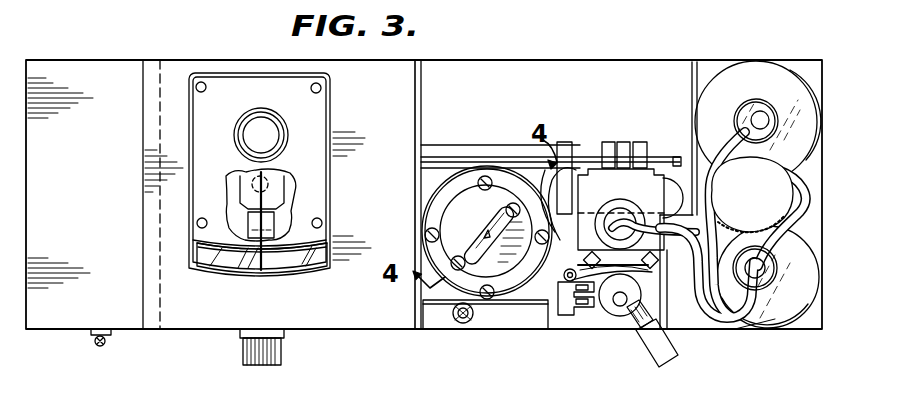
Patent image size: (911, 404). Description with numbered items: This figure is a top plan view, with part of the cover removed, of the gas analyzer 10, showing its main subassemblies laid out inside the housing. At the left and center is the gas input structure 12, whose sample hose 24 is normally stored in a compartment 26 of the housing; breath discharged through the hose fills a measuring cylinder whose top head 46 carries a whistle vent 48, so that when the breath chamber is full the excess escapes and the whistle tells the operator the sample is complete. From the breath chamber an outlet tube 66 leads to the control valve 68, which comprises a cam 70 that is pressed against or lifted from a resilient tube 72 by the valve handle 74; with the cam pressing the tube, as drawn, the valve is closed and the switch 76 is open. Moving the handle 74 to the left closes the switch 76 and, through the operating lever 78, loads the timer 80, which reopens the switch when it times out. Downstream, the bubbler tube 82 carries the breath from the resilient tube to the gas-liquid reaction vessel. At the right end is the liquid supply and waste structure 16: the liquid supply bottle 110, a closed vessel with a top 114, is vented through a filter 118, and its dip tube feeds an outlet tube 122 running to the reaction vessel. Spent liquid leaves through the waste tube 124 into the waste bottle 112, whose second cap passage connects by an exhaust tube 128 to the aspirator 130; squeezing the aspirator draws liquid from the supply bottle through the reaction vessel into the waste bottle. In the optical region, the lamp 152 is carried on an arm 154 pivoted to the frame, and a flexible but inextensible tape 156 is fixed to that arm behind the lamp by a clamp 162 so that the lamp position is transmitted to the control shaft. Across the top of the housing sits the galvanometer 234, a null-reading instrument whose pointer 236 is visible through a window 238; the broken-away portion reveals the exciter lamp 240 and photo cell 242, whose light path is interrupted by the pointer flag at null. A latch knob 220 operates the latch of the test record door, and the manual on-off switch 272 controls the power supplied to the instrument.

The gas analyzer 10 is at (485, 50).
The gas input structure 12 is at (490, 325).
The liquid supply and waste structure 16 is at (772, 328).
The sample hose 24 is at (456, 322).
The compartment 26 is at (506, 320).
The top head 46 is at (428, 222).
The whistle vent 48 is at (498, 220).
The outlet tube 66 is at (621, 209).
The control valve 68 is at (640, 320).
The cam 70 is at (614, 308).
The resilient tube 72 is at (648, 290).
The valve handle 74 is at (644, 344).
The switch 76 is at (566, 304).
The operating lever 78 is at (573, 264).
The timer 80 is at (580, 318).
The bubbler tube 82 is at (662, 220).
The liquid supply bottle 110 is at (786, 80).
The waste bottle 112 is at (792, 322).
The top 114 is at (800, 115).
The filter 118 is at (760, 112).
The outlet tube 122 is at (722, 140).
The waste tube 124 is at (712, 320).
The exhaust tube 128 is at (762, 256).
The aspirator 130 is at (753, 194).
The lamp 152 is at (672, 176).
The arm 154 is at (504, 148).
The tape 156 is at (468, 146).
The clamp 162 is at (621, 142).
The latch knob 220 is at (258, 355).
The galvanometer 234 is at (310, 112).
The pointer 236 is at (265, 262).
The window 238 is at (234, 267).
The exciter lamp 240 is at (271, 182).
The photo cell 242 is at (275, 222).
The manual on-off switch 272 is at (100, 348).